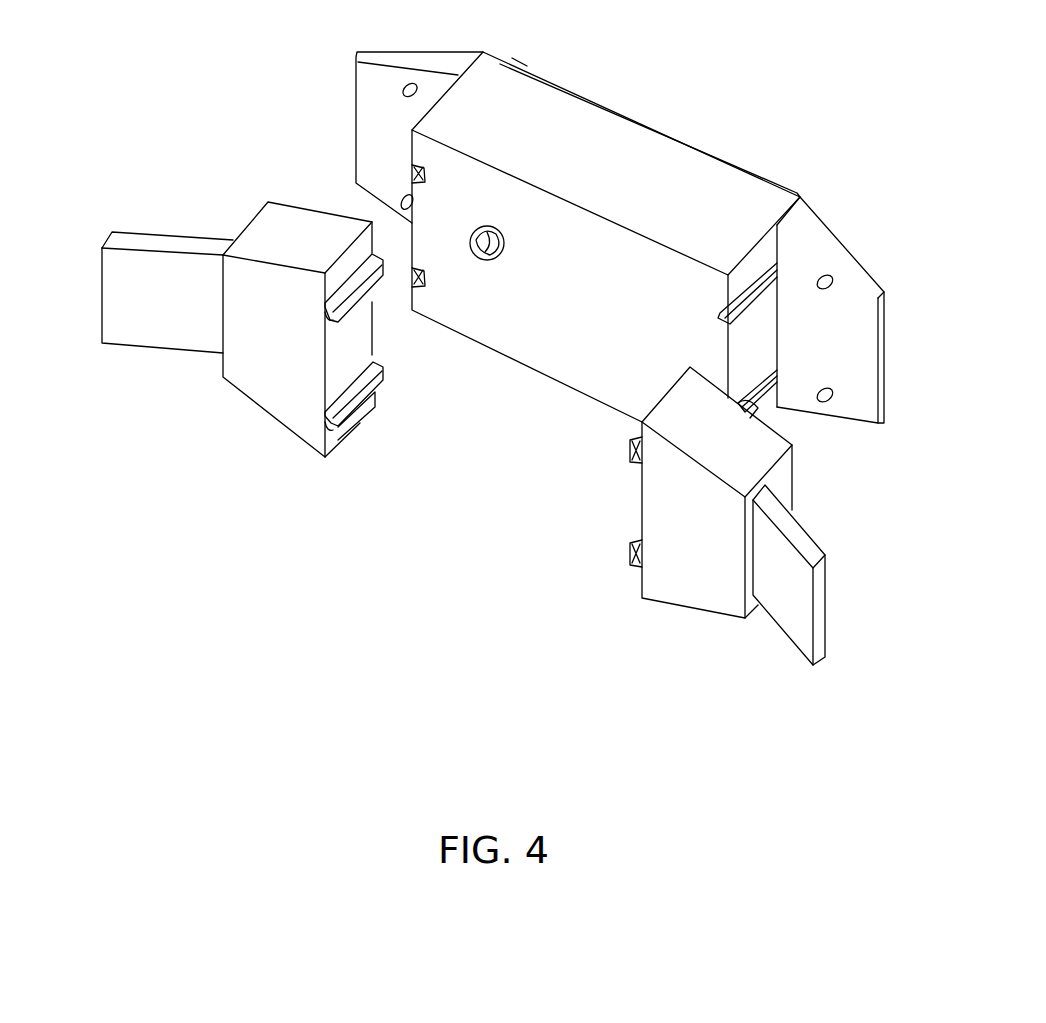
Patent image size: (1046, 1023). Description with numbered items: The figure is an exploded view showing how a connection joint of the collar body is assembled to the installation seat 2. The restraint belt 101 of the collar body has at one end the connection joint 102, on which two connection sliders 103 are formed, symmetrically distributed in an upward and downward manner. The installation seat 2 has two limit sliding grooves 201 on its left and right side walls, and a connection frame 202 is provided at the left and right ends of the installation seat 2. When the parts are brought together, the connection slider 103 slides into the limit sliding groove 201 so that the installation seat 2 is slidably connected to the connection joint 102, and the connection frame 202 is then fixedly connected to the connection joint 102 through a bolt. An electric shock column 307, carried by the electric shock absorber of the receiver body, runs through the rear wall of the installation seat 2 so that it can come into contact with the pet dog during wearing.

The installation seat 2 is at (693, 177).
The restraint belt 101 is at (160, 317).
The connection joint 102 is at (283, 233).
The connection slider 103 is at (363, 390).
The limit sliding groove 201 is at (722, 318).
The connection frame 202 is at (833, 367).
The electric shock column 307 is at (487, 232).